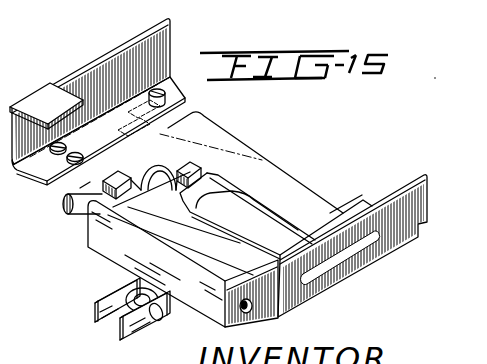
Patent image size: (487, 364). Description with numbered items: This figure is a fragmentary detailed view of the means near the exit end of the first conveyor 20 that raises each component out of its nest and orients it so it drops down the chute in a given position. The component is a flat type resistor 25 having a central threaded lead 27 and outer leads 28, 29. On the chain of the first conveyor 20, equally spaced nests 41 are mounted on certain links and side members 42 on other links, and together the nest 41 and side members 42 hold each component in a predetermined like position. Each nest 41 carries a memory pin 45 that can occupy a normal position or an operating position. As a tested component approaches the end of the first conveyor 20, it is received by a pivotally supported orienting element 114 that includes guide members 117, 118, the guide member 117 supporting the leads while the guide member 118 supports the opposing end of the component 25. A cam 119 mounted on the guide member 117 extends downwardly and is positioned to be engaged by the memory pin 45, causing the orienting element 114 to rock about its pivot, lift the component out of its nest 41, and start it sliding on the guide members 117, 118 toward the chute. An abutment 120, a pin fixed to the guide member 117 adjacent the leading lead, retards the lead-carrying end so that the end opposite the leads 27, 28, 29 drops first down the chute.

The side member 42 is at (41, 91).
The orienting element 114 is at (117, 49).
The guide member 117 is at (41, 178).
The abutment 120 is at (164, 89).
The outer lead 28 is at (58, 152).
The central threaded lead 27 is at (126, 128).
The outer lead 29 is at (134, 110).
The cam 119 is at (80, 188).
The memory pin 45 is at (78, 210).
The flat type resistor 25 is at (268, 165).
The nest 41 is at (103, 250).
The guide member 118 is at (272, 306).
The first conveyor 20 is at (137, 328).